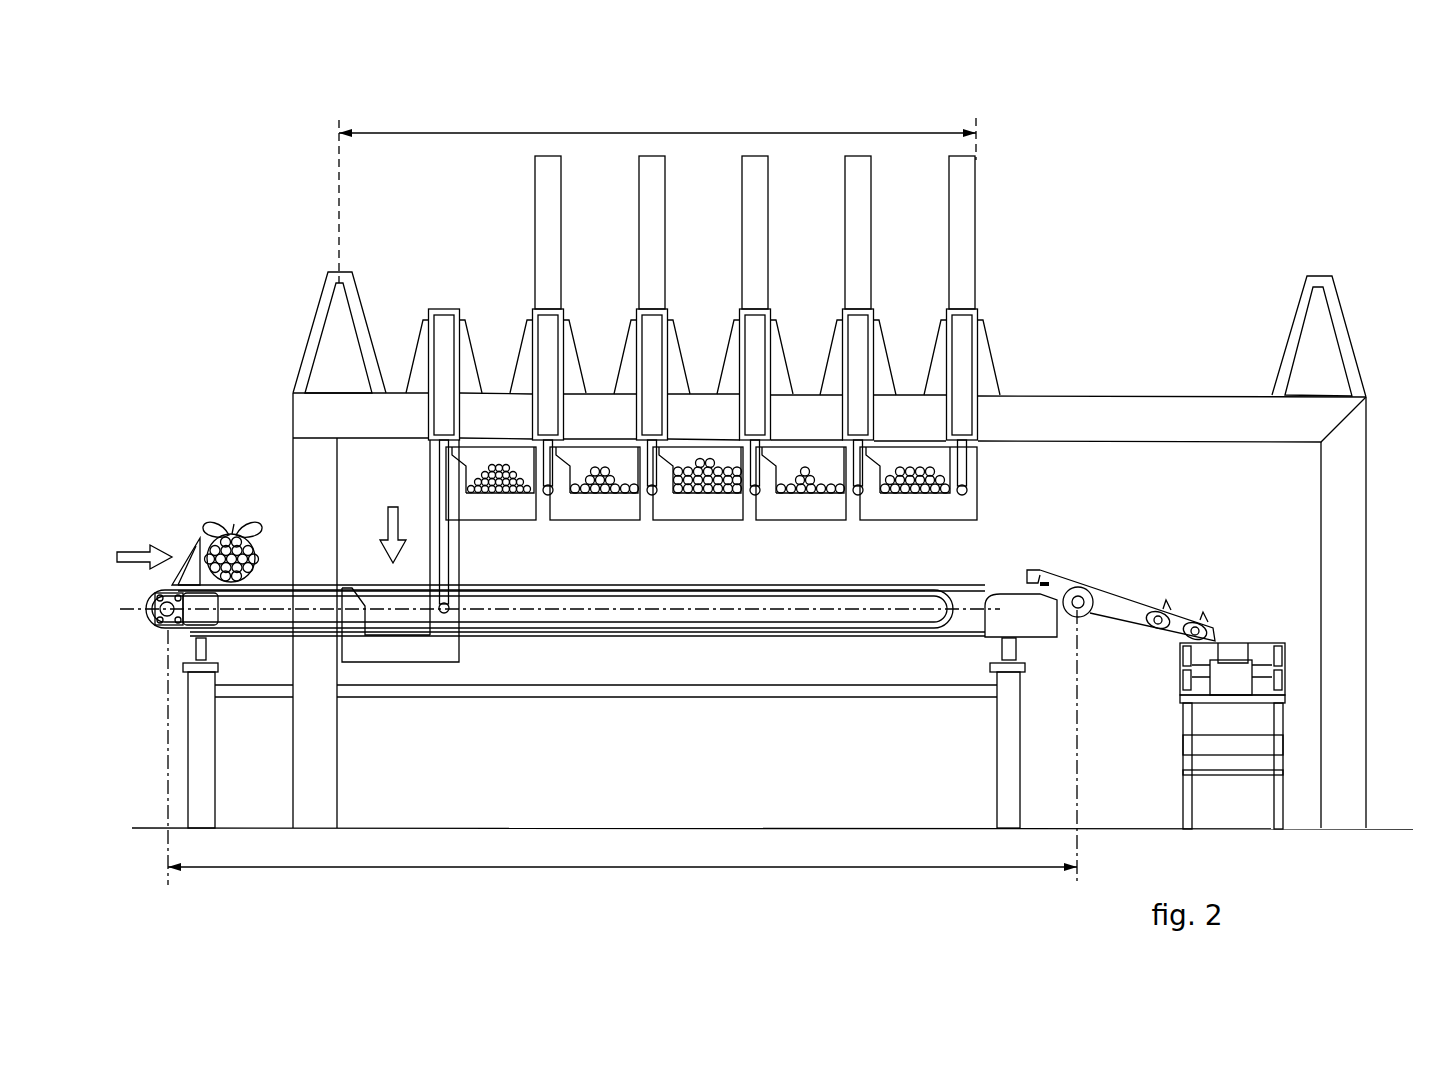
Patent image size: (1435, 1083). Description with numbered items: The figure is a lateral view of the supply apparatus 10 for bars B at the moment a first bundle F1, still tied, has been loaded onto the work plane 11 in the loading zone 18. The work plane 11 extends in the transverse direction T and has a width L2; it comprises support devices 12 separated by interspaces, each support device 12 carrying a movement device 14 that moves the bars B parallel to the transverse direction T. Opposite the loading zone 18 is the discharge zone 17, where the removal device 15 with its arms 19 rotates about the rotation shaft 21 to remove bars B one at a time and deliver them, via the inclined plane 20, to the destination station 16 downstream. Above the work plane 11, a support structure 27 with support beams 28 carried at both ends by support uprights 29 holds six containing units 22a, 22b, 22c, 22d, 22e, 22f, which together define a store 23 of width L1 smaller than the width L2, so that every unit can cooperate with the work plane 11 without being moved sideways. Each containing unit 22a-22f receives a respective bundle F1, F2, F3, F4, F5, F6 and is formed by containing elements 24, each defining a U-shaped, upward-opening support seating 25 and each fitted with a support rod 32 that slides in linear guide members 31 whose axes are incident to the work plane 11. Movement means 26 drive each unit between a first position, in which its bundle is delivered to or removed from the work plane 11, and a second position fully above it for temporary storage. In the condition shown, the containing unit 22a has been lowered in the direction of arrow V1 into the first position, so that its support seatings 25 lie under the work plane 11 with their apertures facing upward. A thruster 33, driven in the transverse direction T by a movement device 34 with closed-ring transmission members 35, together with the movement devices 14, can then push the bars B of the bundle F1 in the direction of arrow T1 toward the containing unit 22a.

The supply apparatus 10 is at (1214, 238).
The work plane 11 is at (867, 576).
The support device 12 is at (180, 746).
The movement device 14 is at (957, 641).
The removal device 15 is at (1110, 591).
The destination station 16 is at (1240, 635).
The discharge zone 17 is at (1010, 572).
The loading zone 18 is at (224, 486).
The arm 19 is at (1068, 588).
The inclined plane 20 is at (1143, 630).
The rotation shaft 21 is at (1077, 605).
The containing unit 22a is at (432, 675).
The containing unit 22b is at (486, 530).
The containing unit 22c is at (596, 530).
The containing unit 22d is at (695, 530).
The containing unit 22e is at (811, 530).
The containing unit 22f is at (926, 530).
The store 23 is at (708, 384).
The containing element 24 is at (565, 505).
The support seating 25 is at (466, 480).
The movement means 26 is at (444, 310).
The support structure 27 is at (861, 550).
The support beam 28 is at (1157, 417).
The support upright 29 is at (316, 770).
The linear guide member 31 is at (417, 345).
The support rod 32 is at (651, 178).
The thruster 33 is at (184, 541).
The movement device 34 is at (541, 648).
The transmission member 35 is at (655, 634).
The bars B is at (248, 553).
The first bundle F1 is at (208, 538).
The second bundle F2 is at (502, 446).
The third bundle F3 is at (605, 458).
The fourth bundle F4 is at (708, 446).
The fifth bundle F5 is at (810, 453).
The sixth bundle F6 is at (915, 458).
The width of the store L1 is at (483, 134).
The width of the work plane L2 is at (537, 869).
The transverse direction T is at (846, 614).
The direction arrow T1 is at (133, 556).
The direction arrow V1 is at (383, 517).